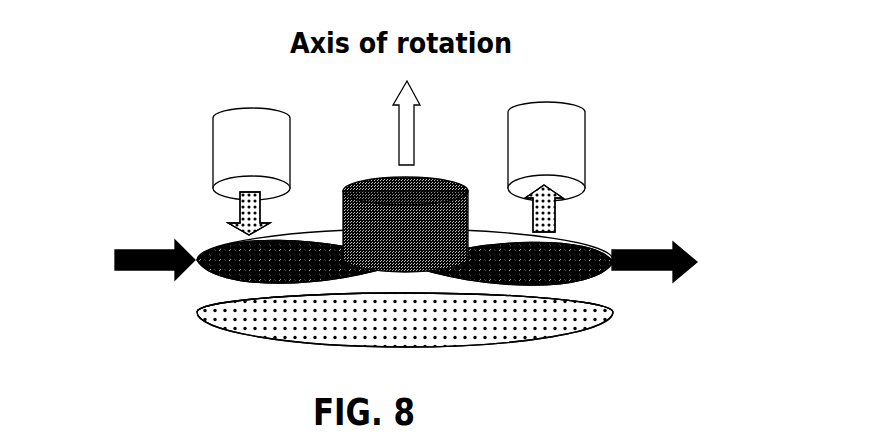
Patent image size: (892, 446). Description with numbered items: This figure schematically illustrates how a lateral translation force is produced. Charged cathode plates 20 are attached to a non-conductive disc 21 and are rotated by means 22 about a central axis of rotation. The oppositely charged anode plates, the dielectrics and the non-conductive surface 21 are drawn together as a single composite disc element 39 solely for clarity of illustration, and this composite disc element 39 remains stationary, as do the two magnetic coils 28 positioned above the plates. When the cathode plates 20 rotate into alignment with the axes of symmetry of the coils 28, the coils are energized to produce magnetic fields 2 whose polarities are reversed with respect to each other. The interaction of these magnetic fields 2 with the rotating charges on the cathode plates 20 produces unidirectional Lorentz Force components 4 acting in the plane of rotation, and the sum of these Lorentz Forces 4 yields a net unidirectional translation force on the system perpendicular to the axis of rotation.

The magnetic fields 2 is at (242, 222).
The Lorentz Force components 4 is at (122, 250).
The cathode plates 20 is at (212, 284).
The non-conductive disc 21 is at (352, 303).
The rotating means 22 is at (380, 177).
The magnetic coils 28 is at (240, 109).
The composite disc element 39 is at (468, 348).